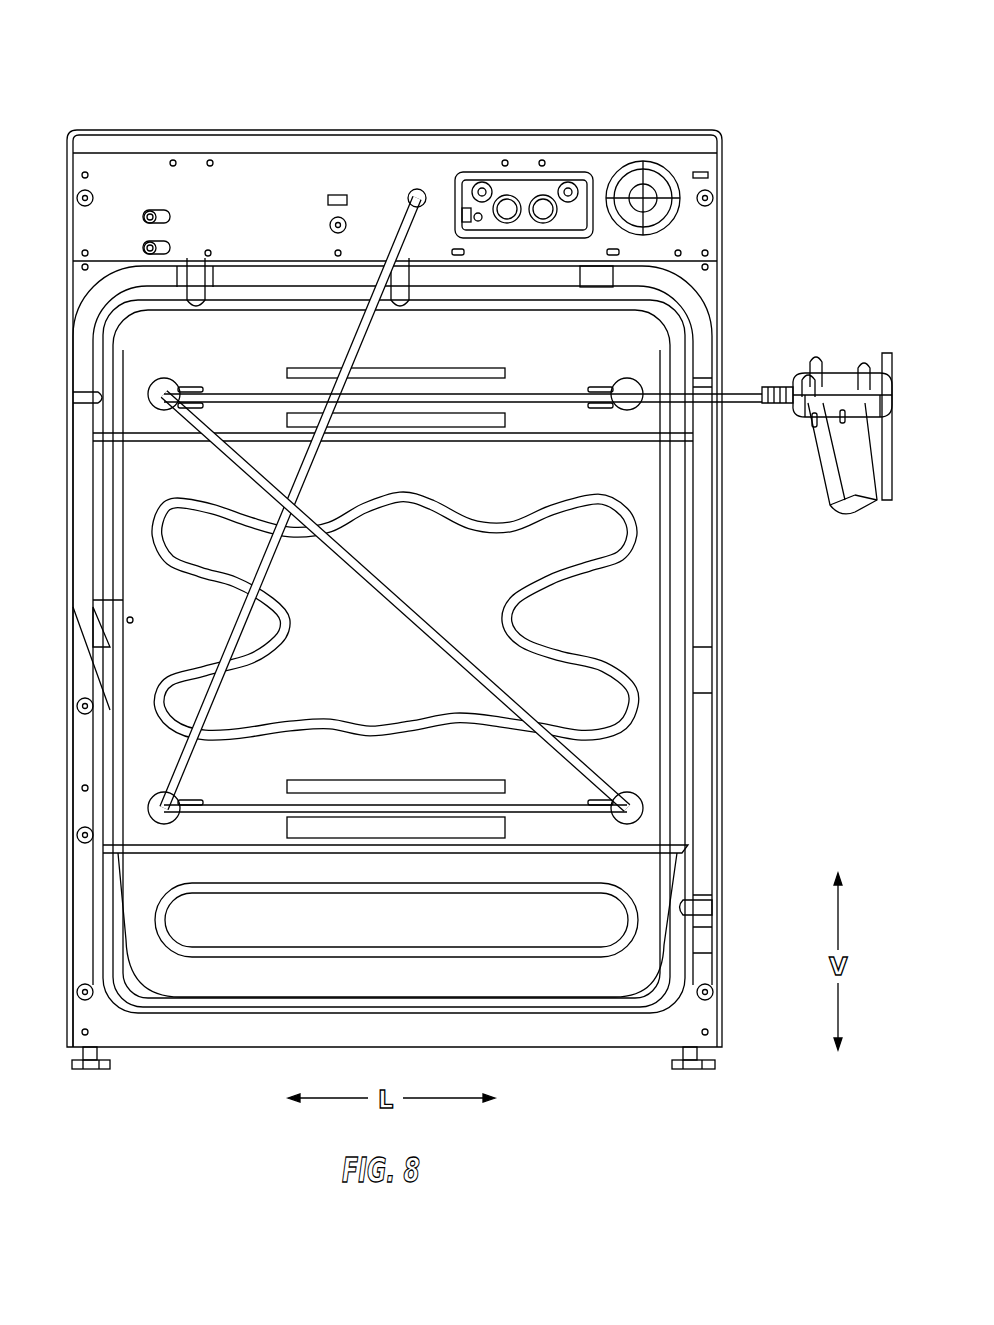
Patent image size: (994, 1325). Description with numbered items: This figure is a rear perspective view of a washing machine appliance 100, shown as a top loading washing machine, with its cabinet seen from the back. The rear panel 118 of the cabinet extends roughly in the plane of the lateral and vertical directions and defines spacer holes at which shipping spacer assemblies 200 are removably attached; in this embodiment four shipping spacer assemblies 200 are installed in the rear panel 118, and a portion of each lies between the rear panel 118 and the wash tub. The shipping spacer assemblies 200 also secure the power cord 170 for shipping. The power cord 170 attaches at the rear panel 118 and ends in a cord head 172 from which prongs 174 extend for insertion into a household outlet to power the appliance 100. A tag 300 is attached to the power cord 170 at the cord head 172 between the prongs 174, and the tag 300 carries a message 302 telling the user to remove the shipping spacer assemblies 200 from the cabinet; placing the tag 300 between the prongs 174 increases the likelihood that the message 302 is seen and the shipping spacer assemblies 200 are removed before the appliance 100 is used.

The washing machine appliance 100 is at (137, 63).
The rear panel 118 is at (127, 618).
The power cord 170 is at (732, 403).
The cord head 172 is at (887, 453).
The prongs 174 is at (813, 357).
The shipping spacer assembly 200 is at (150, 388).
The tag 300 is at (877, 493).
The message 302 is at (830, 485).